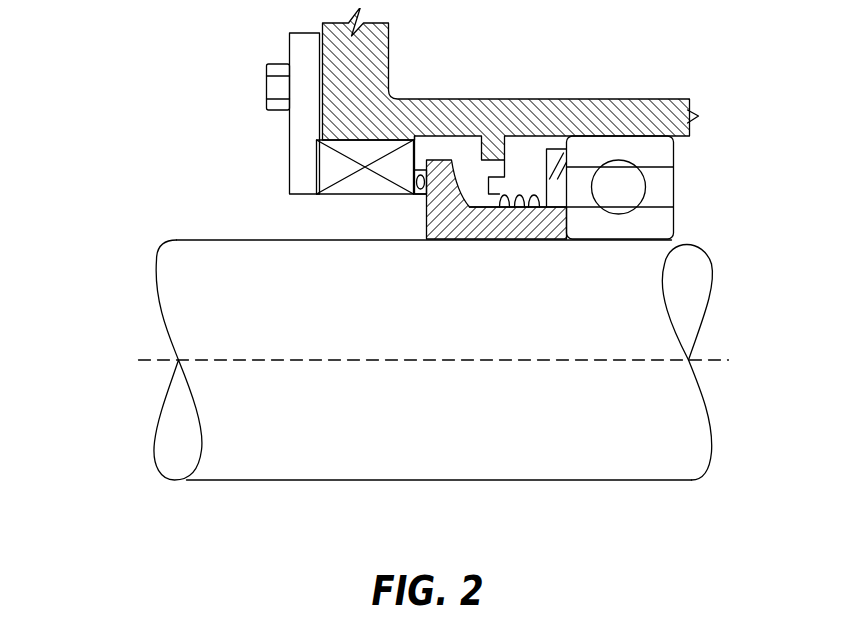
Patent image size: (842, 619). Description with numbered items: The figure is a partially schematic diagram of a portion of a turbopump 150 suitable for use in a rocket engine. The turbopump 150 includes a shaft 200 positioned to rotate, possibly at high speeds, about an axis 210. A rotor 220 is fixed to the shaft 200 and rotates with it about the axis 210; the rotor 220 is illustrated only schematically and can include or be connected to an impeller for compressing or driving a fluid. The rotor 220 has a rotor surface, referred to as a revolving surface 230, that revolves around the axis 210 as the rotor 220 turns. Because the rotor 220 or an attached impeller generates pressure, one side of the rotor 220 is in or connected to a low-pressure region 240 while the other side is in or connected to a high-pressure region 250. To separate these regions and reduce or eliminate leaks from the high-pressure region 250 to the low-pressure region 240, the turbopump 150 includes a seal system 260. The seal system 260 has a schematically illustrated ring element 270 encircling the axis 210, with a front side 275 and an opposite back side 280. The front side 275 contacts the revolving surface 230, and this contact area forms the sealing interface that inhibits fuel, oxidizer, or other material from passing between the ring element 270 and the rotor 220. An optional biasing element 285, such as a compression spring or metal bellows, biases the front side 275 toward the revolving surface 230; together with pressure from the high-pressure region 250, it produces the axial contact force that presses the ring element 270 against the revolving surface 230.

The turbopump 150 is at (130, 45).
The shaft 200 is at (245, 417).
The axis 210 is at (137, 357).
The rotor 220 is at (437, 165).
The revolving surface 230 is at (415, 195).
The low-pressure region 240 is at (218, 30).
The high-pressure region 250 is at (753, 183).
The seal system 260 is at (258, 173).
The ring element 270 is at (420, 172).
The back side 280 is at (412, 176).
The biasing element 285 is at (368, 183).
The front side 275 is at (430, 165).